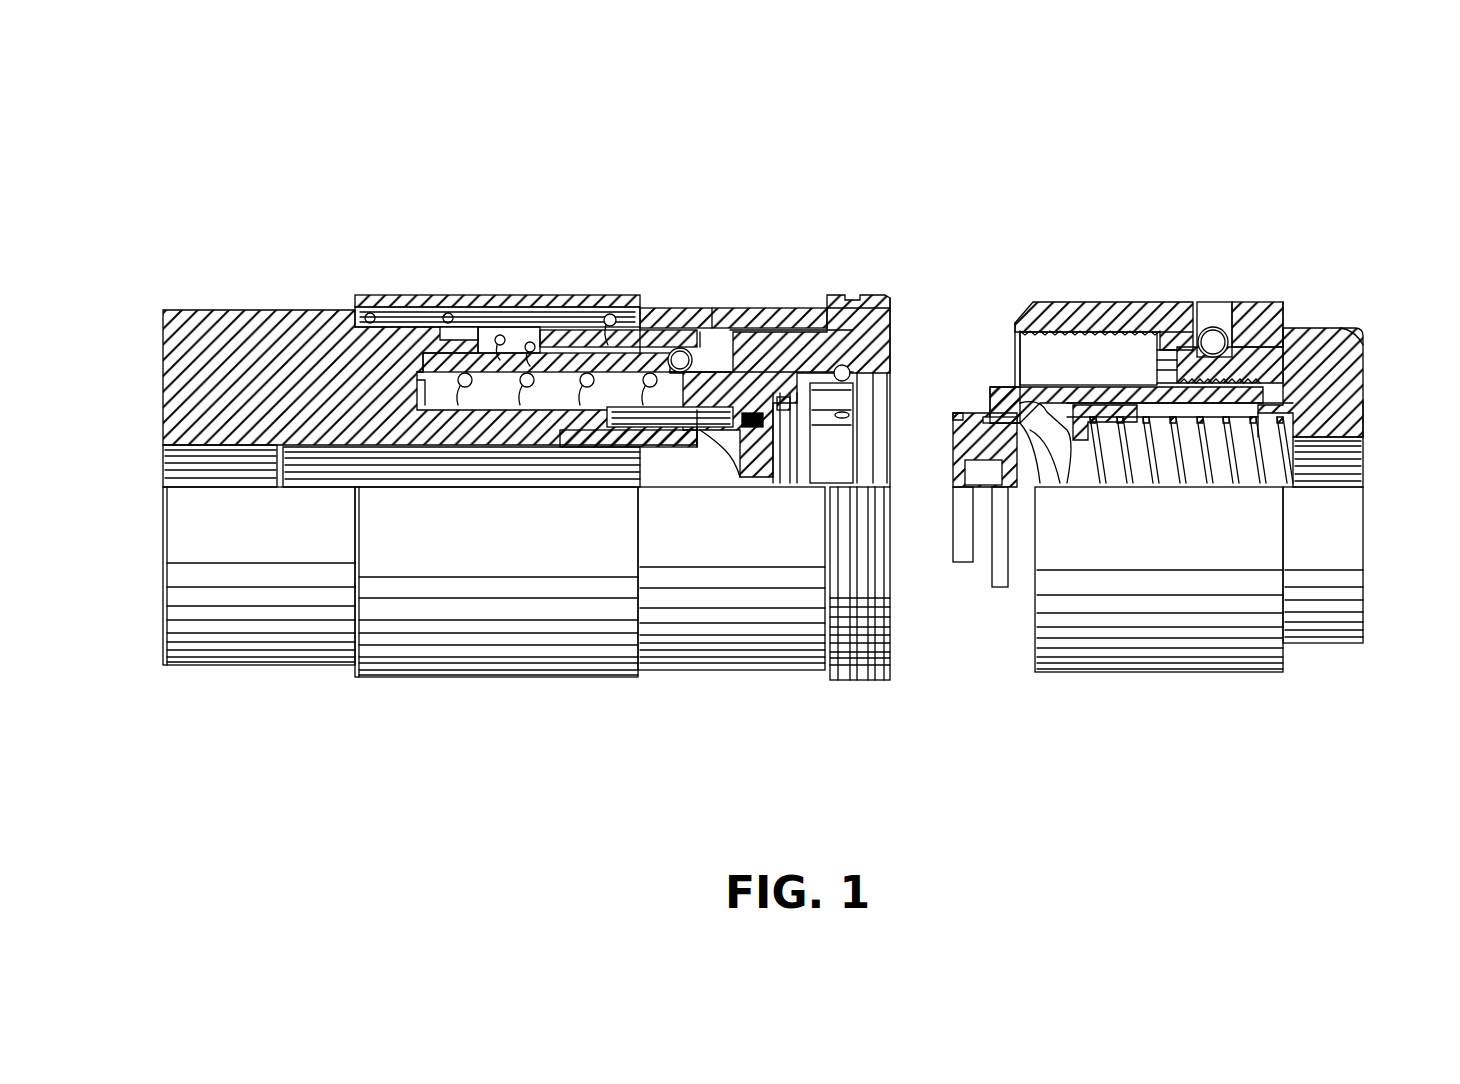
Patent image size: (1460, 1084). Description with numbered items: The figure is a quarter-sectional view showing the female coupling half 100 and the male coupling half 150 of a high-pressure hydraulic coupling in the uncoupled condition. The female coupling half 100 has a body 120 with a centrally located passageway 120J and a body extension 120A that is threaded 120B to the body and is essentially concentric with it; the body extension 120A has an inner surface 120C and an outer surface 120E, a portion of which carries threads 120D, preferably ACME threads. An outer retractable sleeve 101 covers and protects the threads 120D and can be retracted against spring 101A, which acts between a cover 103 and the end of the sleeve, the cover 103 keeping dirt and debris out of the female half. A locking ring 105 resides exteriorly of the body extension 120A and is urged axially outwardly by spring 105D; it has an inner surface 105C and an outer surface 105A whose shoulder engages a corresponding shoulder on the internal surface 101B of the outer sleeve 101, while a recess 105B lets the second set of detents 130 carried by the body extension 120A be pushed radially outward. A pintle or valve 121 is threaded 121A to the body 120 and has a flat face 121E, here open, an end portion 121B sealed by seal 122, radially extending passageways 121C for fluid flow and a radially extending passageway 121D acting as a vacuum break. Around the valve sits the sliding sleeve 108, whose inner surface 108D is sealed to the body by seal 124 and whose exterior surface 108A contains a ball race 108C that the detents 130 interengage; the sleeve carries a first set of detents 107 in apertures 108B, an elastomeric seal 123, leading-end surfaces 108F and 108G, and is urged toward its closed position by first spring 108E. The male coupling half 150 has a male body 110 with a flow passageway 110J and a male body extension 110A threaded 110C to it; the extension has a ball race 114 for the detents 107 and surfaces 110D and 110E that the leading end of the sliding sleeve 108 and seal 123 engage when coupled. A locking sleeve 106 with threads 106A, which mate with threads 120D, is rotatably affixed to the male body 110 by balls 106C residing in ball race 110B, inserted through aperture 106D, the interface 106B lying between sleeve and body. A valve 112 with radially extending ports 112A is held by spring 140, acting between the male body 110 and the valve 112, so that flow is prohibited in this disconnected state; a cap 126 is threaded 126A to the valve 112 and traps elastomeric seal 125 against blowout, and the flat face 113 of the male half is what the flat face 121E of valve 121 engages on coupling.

The female coupling half 100 is at (363, 165).
The male coupling half 150 is at (1235, 162).
The body 120 is at (202, 308).
The body extension 120A is at (710, 330).
The threads 120B is at (403, 308).
The inner surface 120C is at (455, 447).
The threads 120D is at (755, 345).
The outer surface 120E is at (555, 295).
The passageway 120J is at (212, 463).
The cover 103 is at (367, 308).
The outer retractable sleeve 101 is at (665, 340).
The spring 101A is at (455, 330).
The internal surface 101B is at (650, 350).
The locking ring 105 is at (575, 320).
The outer surface 105A is at (503, 340).
The recess 105B is at (700, 320).
The inner surface 105C is at (487, 308).
The spring 105D is at (510, 330).
The first set of radially movable detents 107 is at (860, 295).
The sliding sleeve 108 is at (600, 500).
The exterior surface 108A is at (720, 310).
The apertures 108B is at (903, 300).
The ball race 108C is at (775, 340).
The inner surface 108D is at (590, 425).
The first spring 108E is at (440, 455).
The surface 108F is at (905, 400).
The surface 108G is at (810, 560).
The valve 121 is at (560, 430).
The threads 121A is at (545, 420).
The end portion 121B is at (720, 560).
The radially extending passageways 121C is at (650, 560).
The radially extending passageway 121D is at (520, 430).
The flat face 121E is at (745, 560).
The seal 122 is at (690, 560).
The elastomeric seal 123 is at (790, 560).
The seal 124 is at (470, 430).
The second set of radially movable detents 130 is at (560, 470).
The locking sleeve 106 is at (1200, 315).
The threads 106A is at (1160, 315).
The interface 106B is at (1300, 318).
The balls 106C is at (1270, 320).
The aperture 106D is at (1217, 330).
The male body 110 is at (1340, 368).
The male body extension 110A is at (1340, 467).
The ball race 110B is at (1353, 318).
The threads 110C is at (1360, 405).
The surface 110D is at (1100, 345).
The surface 110E is at (990, 410).
The flow passageway 110J is at (1350, 470).
The valve 112 is at (1040, 487).
The radially extending ports 112A is at (1140, 500).
The flat face 113 is at (945, 470).
The ball race 114 is at (1050, 480).
The seal 125 is at (1040, 440).
The cap 126 is at (973, 403).
The threads 126A is at (983, 413).
The spring 140 is at (1215, 455).